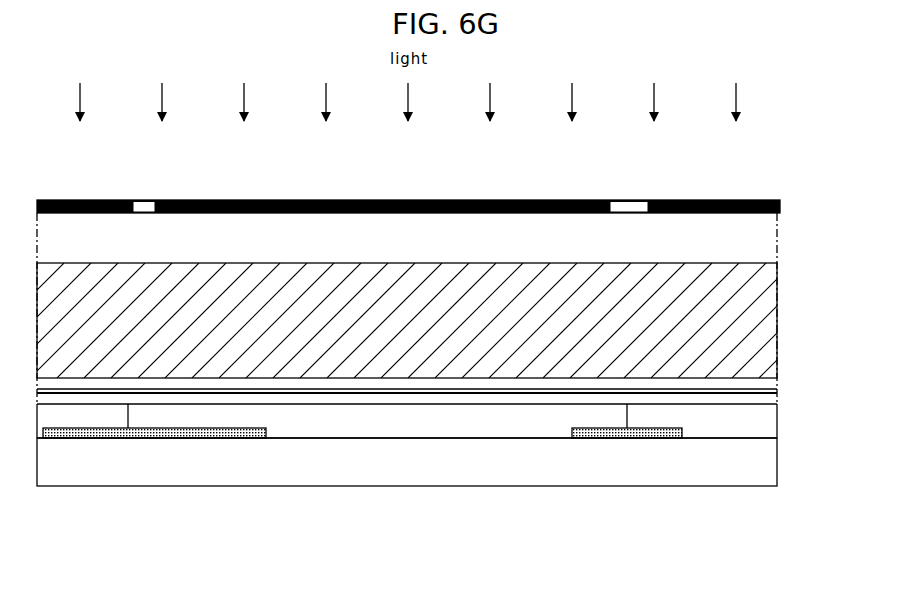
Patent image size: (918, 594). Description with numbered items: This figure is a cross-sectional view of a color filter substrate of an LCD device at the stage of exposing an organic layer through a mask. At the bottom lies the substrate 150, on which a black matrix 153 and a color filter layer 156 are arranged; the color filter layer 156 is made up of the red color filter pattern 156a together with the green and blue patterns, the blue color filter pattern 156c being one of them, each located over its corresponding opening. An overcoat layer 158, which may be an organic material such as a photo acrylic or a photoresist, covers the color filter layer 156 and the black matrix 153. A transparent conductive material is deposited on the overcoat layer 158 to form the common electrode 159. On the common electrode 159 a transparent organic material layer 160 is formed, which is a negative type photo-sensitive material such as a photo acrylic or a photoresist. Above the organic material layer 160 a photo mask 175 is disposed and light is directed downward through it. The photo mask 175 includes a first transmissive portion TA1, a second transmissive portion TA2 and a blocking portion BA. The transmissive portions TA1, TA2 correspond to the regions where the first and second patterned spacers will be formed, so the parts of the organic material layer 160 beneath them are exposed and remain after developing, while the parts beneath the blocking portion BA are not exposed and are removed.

The substrate 150 is at (762, 467).
The black matrix 153 is at (69, 439).
The color filter layer 156 is at (407, 483).
The red color filter pattern 156a is at (405, 420).
The blue color filter pattern 156c is at (110, 420).
The overcoat layer 158 is at (485, 395).
The common electrode 159 is at (323, 383).
The organic material layer 160 is at (595, 284).
The photo mask 175 is at (778, 204).
The blocking portion BA is at (70, 200).
The first transmissive portion TA1 is at (140, 205).
The second transmissive portion TA2 is at (628, 205).